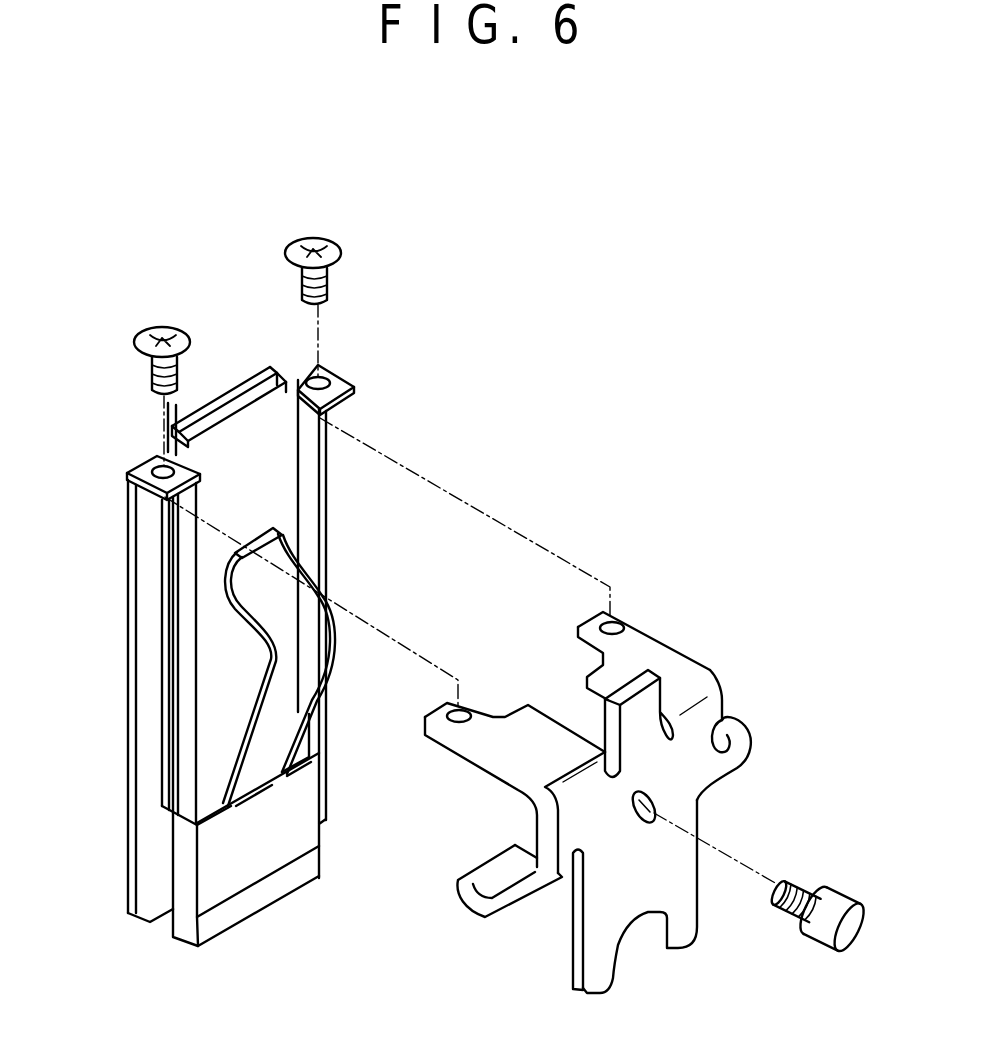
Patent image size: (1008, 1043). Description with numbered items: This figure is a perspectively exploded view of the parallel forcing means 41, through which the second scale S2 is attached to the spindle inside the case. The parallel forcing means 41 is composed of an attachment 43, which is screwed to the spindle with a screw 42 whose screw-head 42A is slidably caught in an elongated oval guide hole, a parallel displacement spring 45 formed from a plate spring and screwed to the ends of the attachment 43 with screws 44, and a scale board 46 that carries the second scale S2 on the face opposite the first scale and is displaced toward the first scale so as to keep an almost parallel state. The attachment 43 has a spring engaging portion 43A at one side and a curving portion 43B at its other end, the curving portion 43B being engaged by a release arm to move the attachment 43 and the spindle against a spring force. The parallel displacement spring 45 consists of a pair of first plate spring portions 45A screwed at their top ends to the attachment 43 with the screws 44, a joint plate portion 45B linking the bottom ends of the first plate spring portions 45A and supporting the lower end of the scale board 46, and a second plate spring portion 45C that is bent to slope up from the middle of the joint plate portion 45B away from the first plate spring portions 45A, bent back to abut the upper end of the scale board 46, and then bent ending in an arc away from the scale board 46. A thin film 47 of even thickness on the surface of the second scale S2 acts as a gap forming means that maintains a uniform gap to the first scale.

The parallel forcing means 41 is at (667, 368).
The screw 42 is at (795, 922).
The screw-head 42A is at (846, 902).
The attachment 43 is at (690, 798).
The spring engaging portion 43A is at (742, 740).
The curving portion 43B is at (490, 912).
The screws 44 is at (168, 328).
The parallel displacement spring 45 is at (143, 703).
The first plate spring portions 45A is at (140, 614).
The joint plate portion 45B is at (260, 866).
The second plate spring portion 45C is at (293, 690).
The scale board 46 is at (218, 742).
The thin film 47 is at (176, 405).
The second scale S2 is at (247, 383).